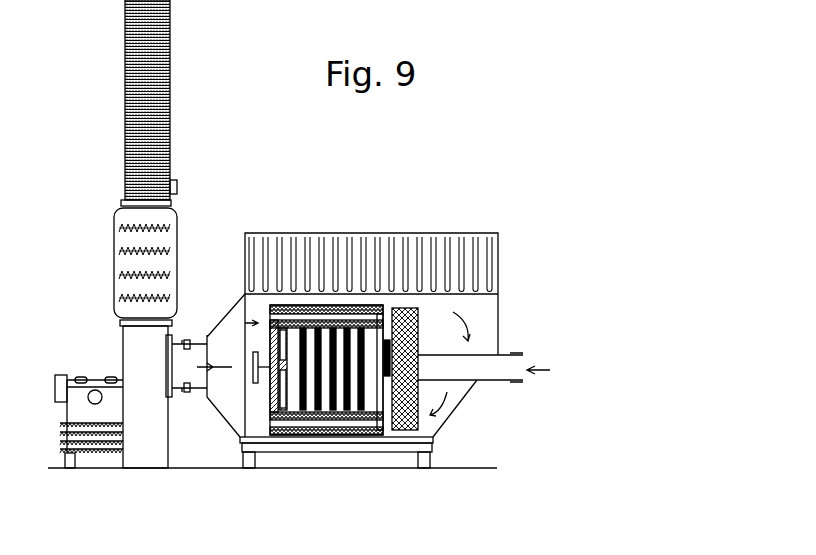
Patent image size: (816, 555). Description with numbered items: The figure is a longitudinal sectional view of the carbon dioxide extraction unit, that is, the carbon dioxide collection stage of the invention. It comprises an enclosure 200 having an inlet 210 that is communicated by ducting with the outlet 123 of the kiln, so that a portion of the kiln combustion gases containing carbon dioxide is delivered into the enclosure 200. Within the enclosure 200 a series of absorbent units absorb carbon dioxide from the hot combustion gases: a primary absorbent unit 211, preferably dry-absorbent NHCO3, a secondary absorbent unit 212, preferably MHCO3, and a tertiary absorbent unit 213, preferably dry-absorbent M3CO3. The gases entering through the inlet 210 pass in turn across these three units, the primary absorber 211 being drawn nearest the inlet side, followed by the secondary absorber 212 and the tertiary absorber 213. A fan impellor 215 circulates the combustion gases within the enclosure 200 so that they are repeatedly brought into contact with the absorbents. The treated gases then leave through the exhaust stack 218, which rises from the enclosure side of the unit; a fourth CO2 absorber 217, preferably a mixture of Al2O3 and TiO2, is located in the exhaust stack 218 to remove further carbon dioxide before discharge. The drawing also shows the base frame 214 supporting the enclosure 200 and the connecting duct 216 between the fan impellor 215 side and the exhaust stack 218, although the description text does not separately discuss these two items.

The enclosure 200 is at (304, 204).
The inlet 210 is at (500, 382).
The primary absorbent unit 211 is at (412, 305).
The secondary absorbent unit 212 is at (370, 300).
The tertiary absorbent unit 213 is at (347, 412).
The base frame 214 is at (262, 425).
The fan impellor 215 is at (257, 400).
The connecting duct 216 is at (173, 389).
The fourth CO2 absorber 217 is at (177, 216).
The exhaust stack 218 is at (125, 141).
The outlet 123 is at (563, 374).